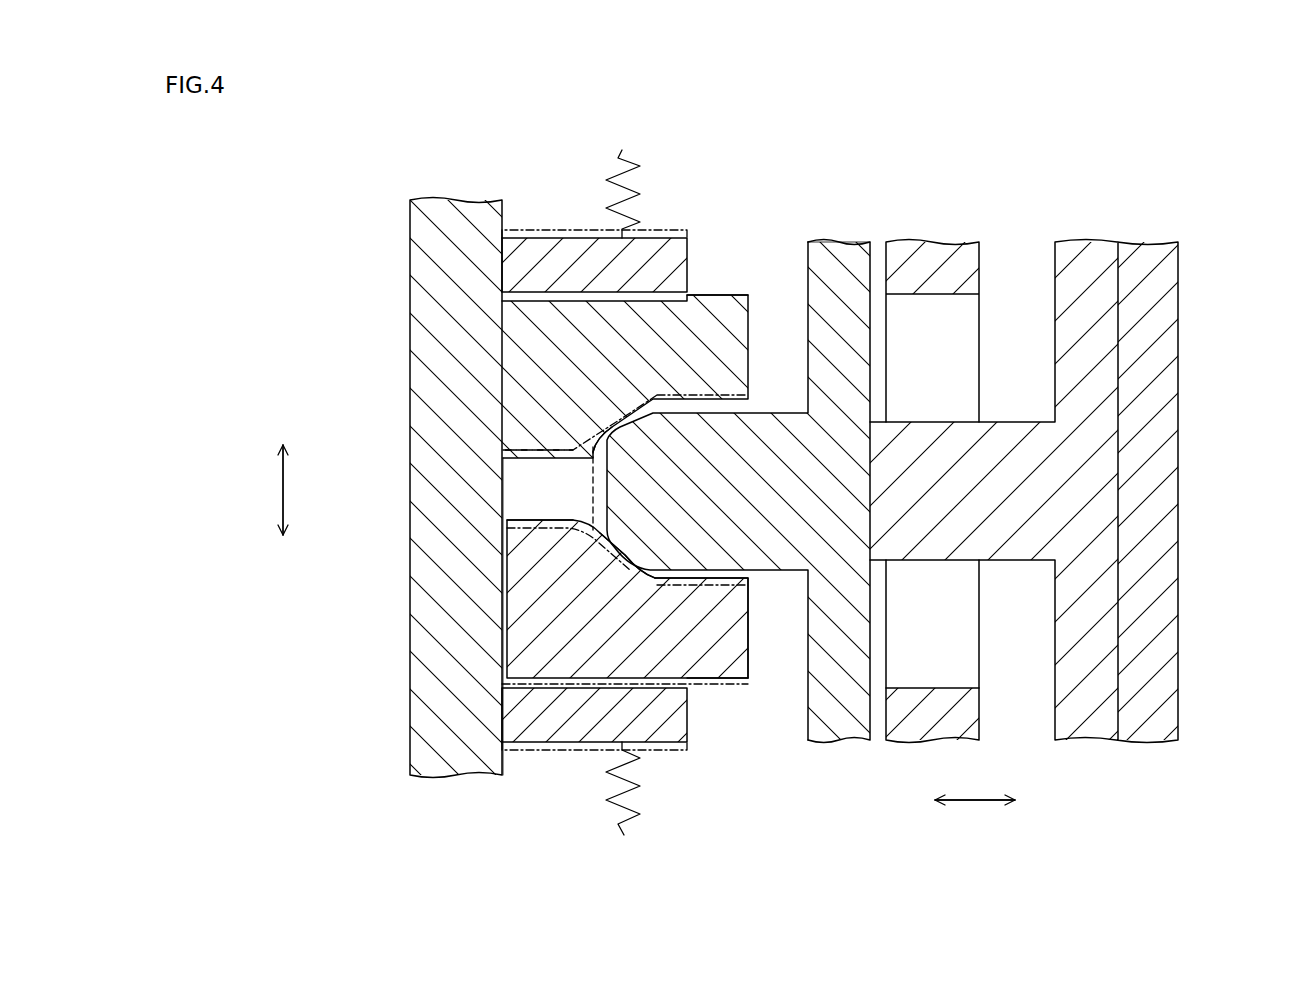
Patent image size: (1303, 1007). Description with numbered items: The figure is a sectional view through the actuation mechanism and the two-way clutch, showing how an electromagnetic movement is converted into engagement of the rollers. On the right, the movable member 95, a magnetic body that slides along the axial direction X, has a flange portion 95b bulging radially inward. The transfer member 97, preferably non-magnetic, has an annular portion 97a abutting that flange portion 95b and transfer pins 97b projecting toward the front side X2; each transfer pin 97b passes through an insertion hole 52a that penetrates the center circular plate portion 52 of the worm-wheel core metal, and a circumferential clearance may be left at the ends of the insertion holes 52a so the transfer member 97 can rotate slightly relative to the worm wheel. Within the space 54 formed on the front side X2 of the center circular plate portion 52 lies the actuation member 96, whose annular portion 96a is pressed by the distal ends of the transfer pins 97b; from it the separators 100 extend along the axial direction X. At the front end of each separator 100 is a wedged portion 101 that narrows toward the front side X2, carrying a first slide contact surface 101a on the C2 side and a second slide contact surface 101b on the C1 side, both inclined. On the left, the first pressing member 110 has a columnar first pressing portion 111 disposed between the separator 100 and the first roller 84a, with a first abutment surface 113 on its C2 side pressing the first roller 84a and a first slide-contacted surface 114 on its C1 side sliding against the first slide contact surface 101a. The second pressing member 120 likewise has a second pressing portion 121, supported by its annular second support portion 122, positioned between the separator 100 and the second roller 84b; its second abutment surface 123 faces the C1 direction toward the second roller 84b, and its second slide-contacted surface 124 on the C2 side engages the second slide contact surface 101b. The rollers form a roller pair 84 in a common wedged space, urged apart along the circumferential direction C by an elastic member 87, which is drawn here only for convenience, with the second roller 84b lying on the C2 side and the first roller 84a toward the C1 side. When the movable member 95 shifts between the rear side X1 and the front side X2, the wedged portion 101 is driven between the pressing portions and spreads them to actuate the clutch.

The second pressing member 120 is at (440, 320).
The second pressing portion 121 is at (600, 373).
The second support portion 122 is at (418, 482).
The second abutment surface 123 is at (705, 296).
The second slide-contacted surface 124 is at (548, 447).
The first pressing member 110 is at (545, 615).
The first pressing portion 111 is at (620, 648).
The first abutment surface 113 is at (700, 686).
The first slide-contacted surface 114 is at (562, 524).
The wedged portion 101 is at (620, 490).
The first slide contact surface 101a is at (635, 566).
The second slide contact surface 101b is at (590, 442).
The separator 100 is at (772, 573).
The roller pair 84 is at (594, 497).
The first roller 84a is at (525, 745).
The second roller 84b is at (525, 236).
The elastic member 87 is at (636, 178).
The space 54 is at (787, 262).
The actuation member 96 is at (860, 240).
The annular portion 96a is at (836, 240).
The center circular plate portion 52 is at (922, 240).
The insertion hole 52a is at (940, 688).
The movable member 95 is at (1183, 380).
The flange portion 95b is at (1165, 320).
The transfer member 97 is at (1100, 240).
The annular portion 97a is at (1052, 258).
The transfer pin 97b is at (1005, 422).
The circumferential direction C is at (280, 490).
The C1 direction C1 is at (282, 424).
The C2 direction C2 is at (282, 562).
The axial direction X is at (975, 802).
The rear side X1 is at (1030, 802).
The front side X2 is at (915, 802).